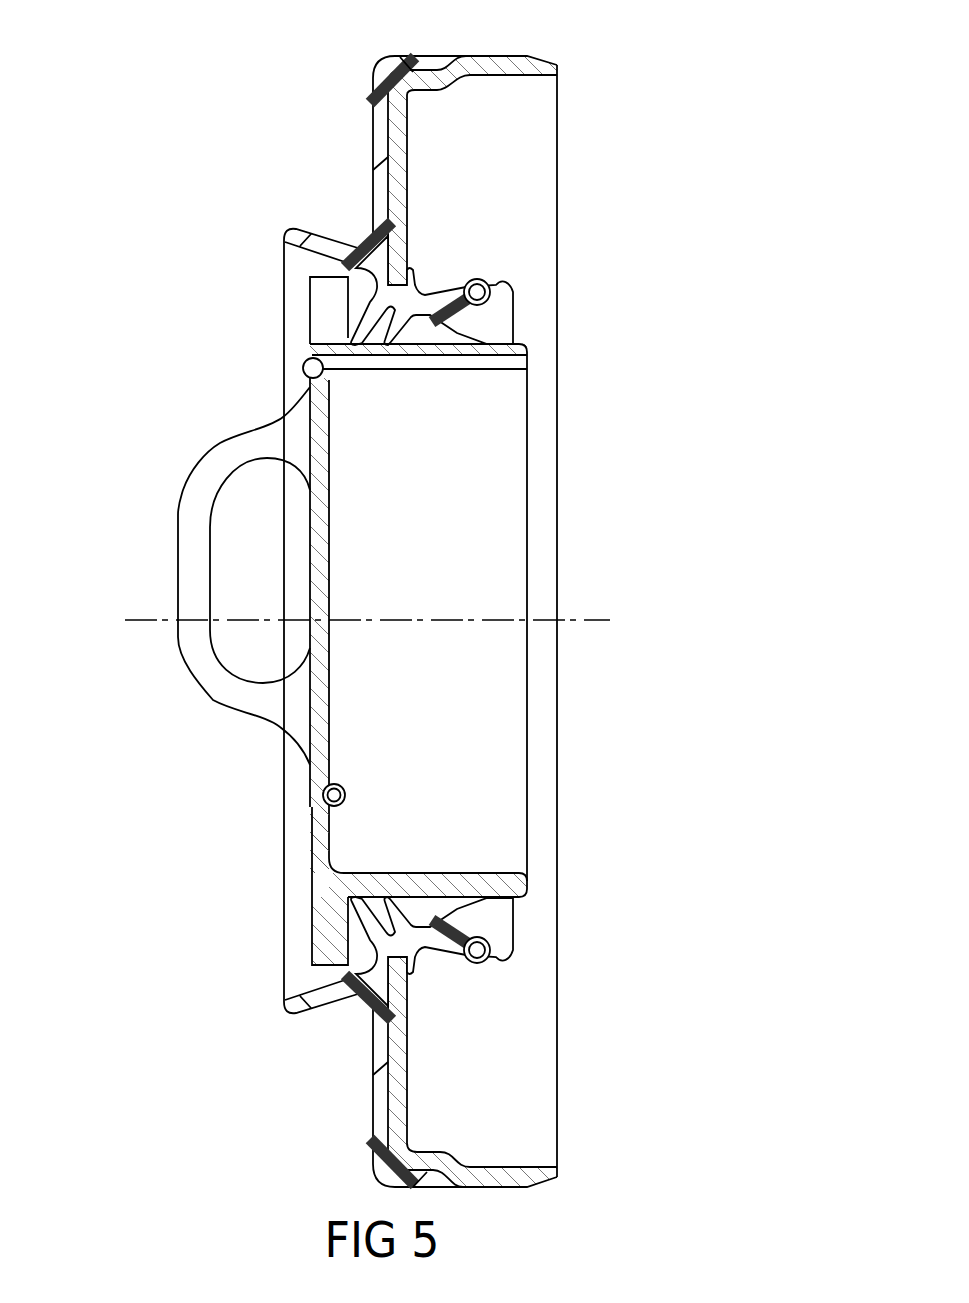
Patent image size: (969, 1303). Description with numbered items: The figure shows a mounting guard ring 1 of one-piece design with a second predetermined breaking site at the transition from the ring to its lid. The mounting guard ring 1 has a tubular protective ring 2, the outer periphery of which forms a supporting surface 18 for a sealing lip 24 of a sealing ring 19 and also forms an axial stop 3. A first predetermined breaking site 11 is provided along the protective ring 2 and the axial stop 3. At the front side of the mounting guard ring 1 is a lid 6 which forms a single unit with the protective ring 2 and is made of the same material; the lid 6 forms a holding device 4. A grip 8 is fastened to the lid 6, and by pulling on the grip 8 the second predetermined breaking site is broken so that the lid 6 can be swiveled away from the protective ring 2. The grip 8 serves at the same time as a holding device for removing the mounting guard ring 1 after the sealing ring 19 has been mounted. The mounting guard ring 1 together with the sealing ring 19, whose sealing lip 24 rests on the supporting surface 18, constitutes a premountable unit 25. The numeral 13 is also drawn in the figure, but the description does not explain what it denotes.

The mounting guard ring 1 is at (158, 742).
The protective ring 2 is at (497, 880).
The axial stop 3 is at (323, 920).
The holding device 4 is at (302, 370).
The lid 6 is at (300, 544).
The grip 8 is at (185, 586).
The first predetermined breaking site 11 is at (322, 297).
The O-ring 13 is at (322, 794).
The supporting surface 18 is at (516, 342).
The sealing ring 19 is at (497, 60).
The sealing lip 24 is at (490, 335).
The premountable unit 25 is at (524, 904).